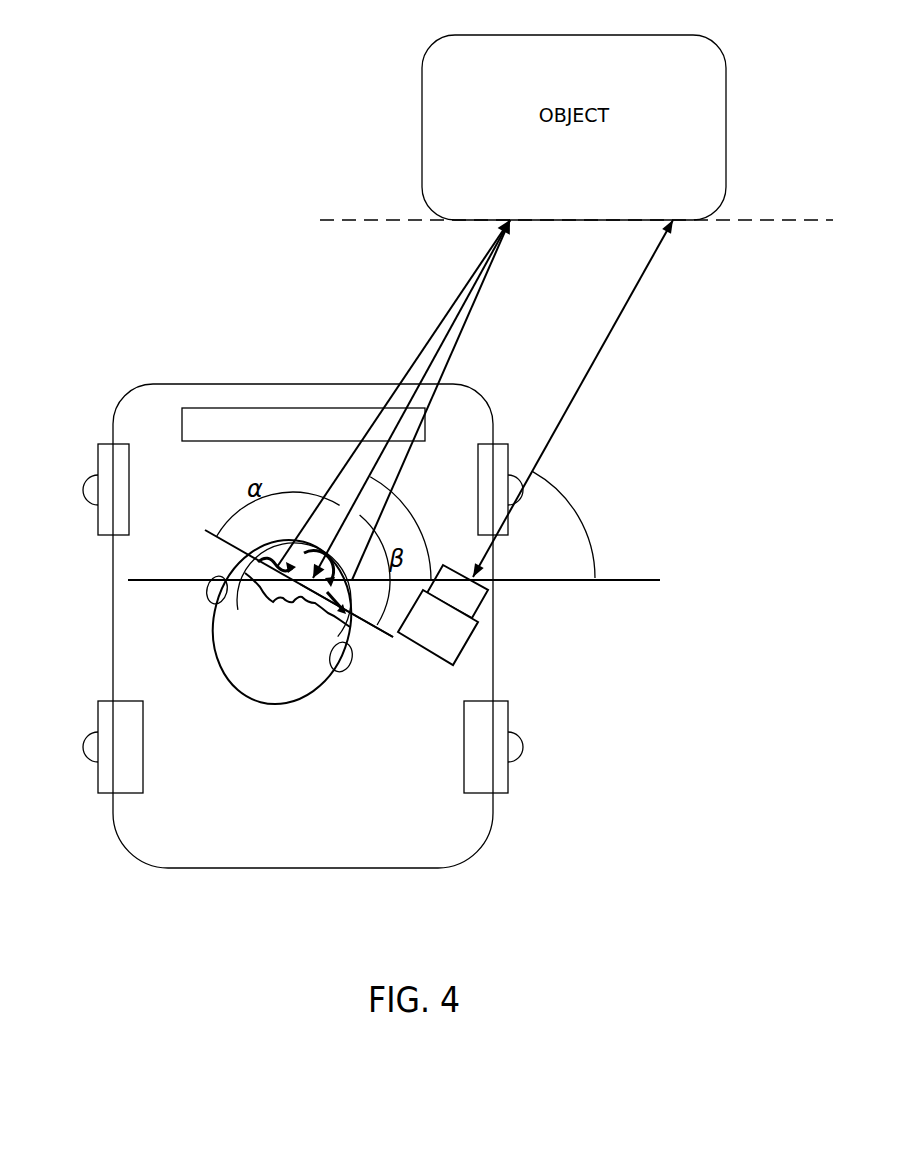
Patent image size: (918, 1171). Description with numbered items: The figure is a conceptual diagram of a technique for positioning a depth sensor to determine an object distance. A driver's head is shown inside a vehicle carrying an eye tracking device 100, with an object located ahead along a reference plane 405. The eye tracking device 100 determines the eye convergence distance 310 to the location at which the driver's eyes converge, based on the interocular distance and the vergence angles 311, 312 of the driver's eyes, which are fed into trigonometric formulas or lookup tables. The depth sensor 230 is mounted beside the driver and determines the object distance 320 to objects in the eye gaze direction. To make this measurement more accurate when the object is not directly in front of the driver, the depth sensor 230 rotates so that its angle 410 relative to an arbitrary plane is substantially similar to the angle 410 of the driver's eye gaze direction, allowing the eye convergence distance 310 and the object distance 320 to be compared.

The eye tracking device 100 is at (182, 418).
The depth sensor 230 is at (479, 628).
The eye convergence distance 310 is at (430, 352).
The vergence angle 311 is at (233, 537).
The vergence angle 312 is at (372, 628).
The object distance 320 is at (615, 323).
The object reference plane 405 is at (752, 220).
The angle 410 is at (394, 500).